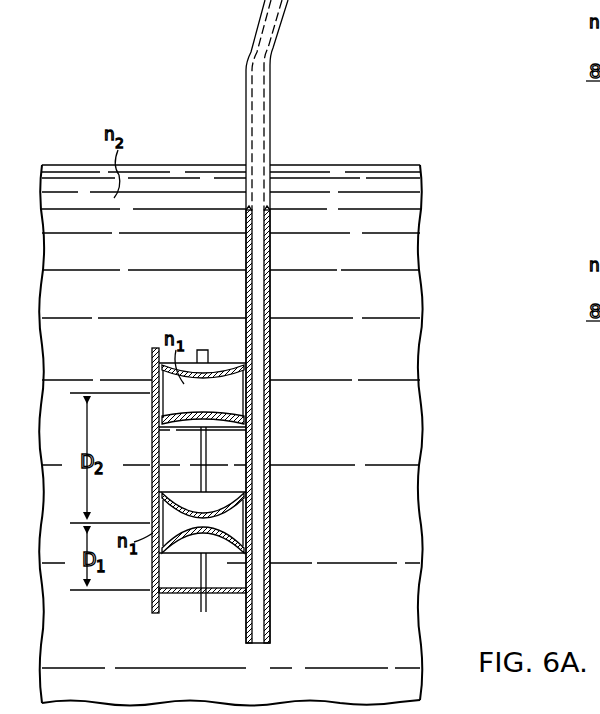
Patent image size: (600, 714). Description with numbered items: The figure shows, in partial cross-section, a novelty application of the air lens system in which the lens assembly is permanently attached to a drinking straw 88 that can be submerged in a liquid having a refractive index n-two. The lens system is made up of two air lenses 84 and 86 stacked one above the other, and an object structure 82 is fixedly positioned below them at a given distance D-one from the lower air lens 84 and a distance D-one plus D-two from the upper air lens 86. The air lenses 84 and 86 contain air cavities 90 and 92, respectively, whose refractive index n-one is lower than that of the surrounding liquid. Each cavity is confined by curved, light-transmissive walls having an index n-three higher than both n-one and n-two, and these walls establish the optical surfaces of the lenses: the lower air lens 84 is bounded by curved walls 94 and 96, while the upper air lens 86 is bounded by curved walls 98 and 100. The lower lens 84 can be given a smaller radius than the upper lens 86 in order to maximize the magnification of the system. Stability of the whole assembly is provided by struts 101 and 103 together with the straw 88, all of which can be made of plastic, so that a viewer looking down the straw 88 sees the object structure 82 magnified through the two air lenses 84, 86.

The object structure 82 is at (180, 597).
The air lens 84 is at (170, 491).
The air lens 86 is at (158, 436).
The drinking straw 88 is at (272, 112).
The air cavity 90 is at (240, 526).
The air cavity 92 is at (232, 400).
The curved wall 94 is at (178, 538).
The curved wall 96 is at (220, 507).
The curved wall 98 is at (214, 420).
The curved wall 100 is at (220, 364).
The strut 101 is at (150, 606).
The strut 103 is at (208, 603).